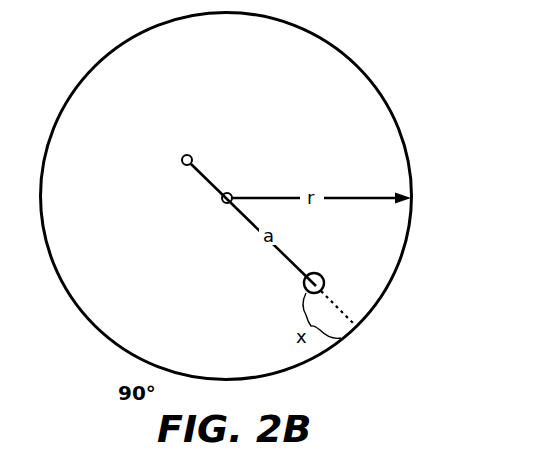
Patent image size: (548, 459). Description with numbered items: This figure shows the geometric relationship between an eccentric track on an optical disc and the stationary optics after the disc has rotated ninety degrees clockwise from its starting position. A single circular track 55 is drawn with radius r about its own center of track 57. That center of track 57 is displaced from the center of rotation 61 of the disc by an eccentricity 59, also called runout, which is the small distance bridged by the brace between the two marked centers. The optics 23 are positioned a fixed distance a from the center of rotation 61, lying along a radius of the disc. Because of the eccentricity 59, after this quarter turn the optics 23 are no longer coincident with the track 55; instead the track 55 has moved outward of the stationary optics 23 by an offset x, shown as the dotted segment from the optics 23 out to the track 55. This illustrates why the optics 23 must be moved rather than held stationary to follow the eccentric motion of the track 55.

The circular track 55 is at (324, 34).
The center of rotation 61 is at (189, 154).
The eccentricity 59 is at (195, 157).
The center of track 57 is at (226, 205).
The optics 23 is at (326, 275).